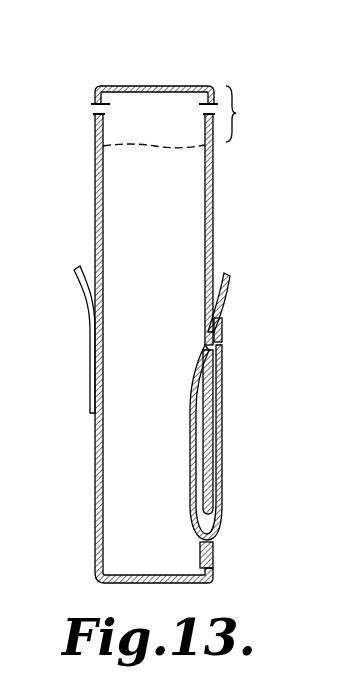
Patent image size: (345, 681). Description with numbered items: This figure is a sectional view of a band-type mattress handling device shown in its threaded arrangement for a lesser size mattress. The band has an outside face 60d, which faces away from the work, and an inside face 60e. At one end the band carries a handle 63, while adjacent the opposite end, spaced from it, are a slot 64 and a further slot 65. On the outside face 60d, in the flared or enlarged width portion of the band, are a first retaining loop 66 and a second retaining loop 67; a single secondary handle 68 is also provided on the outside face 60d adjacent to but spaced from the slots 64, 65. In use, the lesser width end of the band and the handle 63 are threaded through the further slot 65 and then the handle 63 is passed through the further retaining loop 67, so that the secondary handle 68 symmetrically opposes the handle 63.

The outside face 60d is at (95, 193).
The inside face 60e is at (104, 287).
The secondary handle 68 is at (84, 294).
The handle 63 is at (230, 283).
The second retaining loop 67 is at (222, 323).
The first retaining loop 66 is at (192, 404).
The slot 64 is at (216, 456).
The further slot 65 is at (215, 545).